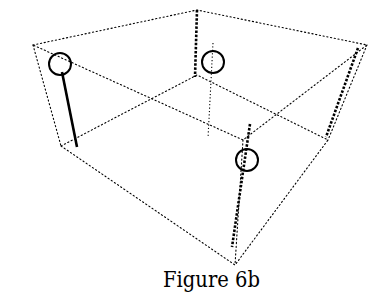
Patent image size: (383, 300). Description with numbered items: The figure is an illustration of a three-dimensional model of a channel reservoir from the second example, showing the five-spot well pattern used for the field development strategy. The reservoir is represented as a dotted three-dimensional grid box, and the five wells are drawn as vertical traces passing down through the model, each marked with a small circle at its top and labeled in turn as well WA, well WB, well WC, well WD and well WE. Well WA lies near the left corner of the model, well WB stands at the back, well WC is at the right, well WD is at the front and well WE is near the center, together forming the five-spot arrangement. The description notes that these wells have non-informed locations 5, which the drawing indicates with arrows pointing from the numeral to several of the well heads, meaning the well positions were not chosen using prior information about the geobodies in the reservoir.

The non-informed locations 5 is at (200, 77).
The well WA is at (81, 105).
The well WB is at (181, 43).
The well WC is at (335, 92).
The well WD is at (223, 185).
The well WE is at (230, 90).